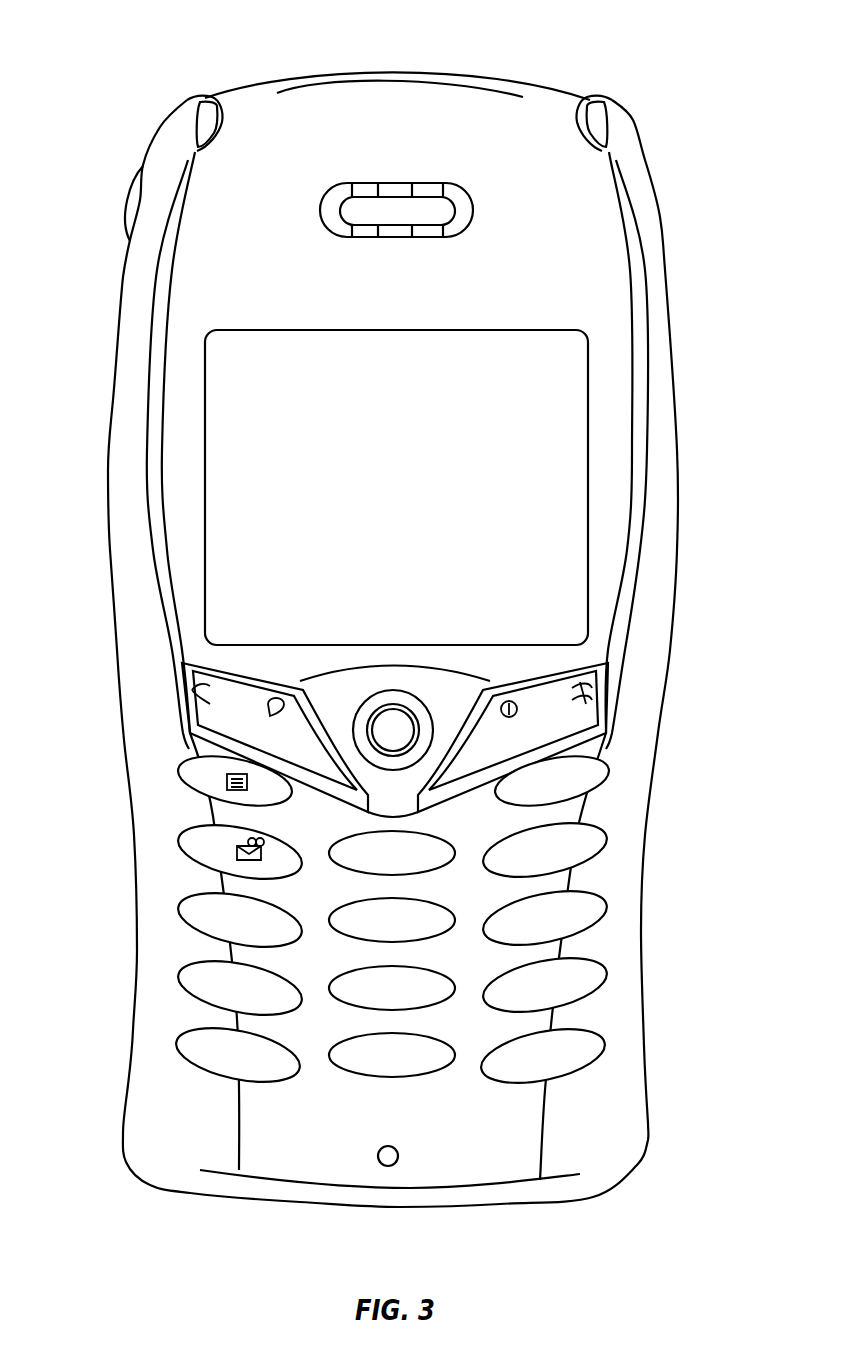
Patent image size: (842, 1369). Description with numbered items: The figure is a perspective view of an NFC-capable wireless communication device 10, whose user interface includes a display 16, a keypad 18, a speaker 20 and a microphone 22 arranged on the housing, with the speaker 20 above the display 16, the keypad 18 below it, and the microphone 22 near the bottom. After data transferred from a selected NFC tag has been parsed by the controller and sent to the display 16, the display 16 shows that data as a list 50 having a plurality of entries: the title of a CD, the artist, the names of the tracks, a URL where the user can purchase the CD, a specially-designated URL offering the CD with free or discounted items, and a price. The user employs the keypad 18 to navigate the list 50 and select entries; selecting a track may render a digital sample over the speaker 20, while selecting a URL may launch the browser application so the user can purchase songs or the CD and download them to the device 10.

The NFC-capable device 10 is at (698, 65).
The display 16 is at (588, 450).
The keypad 18 is at (608, 874).
The speaker 20 is at (395, 185).
The microphone 22 is at (392, 1166).
The list 50 is at (252, 363).